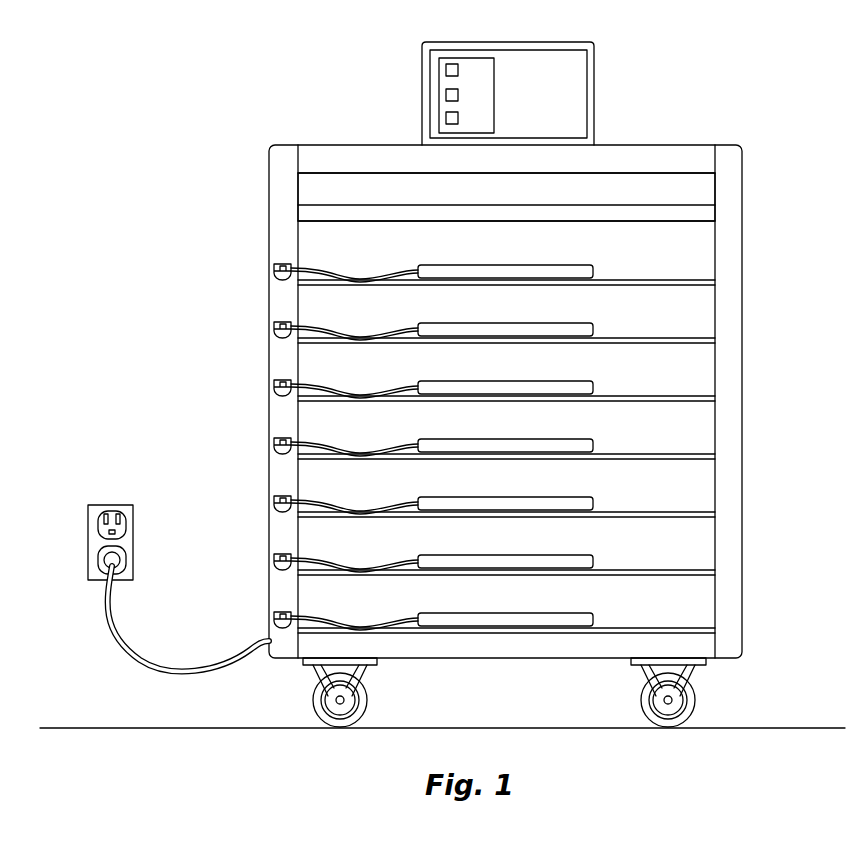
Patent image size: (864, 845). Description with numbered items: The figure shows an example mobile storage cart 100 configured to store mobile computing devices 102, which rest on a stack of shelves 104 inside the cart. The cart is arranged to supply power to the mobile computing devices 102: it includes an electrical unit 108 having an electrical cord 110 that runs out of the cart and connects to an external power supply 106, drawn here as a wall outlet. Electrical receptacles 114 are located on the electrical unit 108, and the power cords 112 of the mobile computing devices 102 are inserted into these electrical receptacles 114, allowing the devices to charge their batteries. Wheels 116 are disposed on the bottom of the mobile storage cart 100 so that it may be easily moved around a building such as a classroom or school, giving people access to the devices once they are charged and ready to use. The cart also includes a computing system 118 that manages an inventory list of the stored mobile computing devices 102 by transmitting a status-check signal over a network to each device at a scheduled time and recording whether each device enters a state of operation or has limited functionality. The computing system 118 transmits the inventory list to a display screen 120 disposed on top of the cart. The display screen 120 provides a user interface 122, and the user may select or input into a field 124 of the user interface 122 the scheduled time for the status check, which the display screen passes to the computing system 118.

The mobile storage cart 100 is at (751, 62).
The mobile computing devices 102 is at (592, 508).
The shelves 104 is at (697, 517).
The external power supply 106 is at (93, 515).
The electrical unit 108 is at (280, 598).
The electrical cord 110 is at (108, 604).
The power cords 112 is at (297, 278).
The electrical receptacles 114 is at (275, 508).
The wheels 116 is at (322, 712).
The computing system 118 is at (695, 215).
The display screen 120 is at (560, 65).
The user interface 122 is at (487, 82).
The field 124 is at (457, 65).